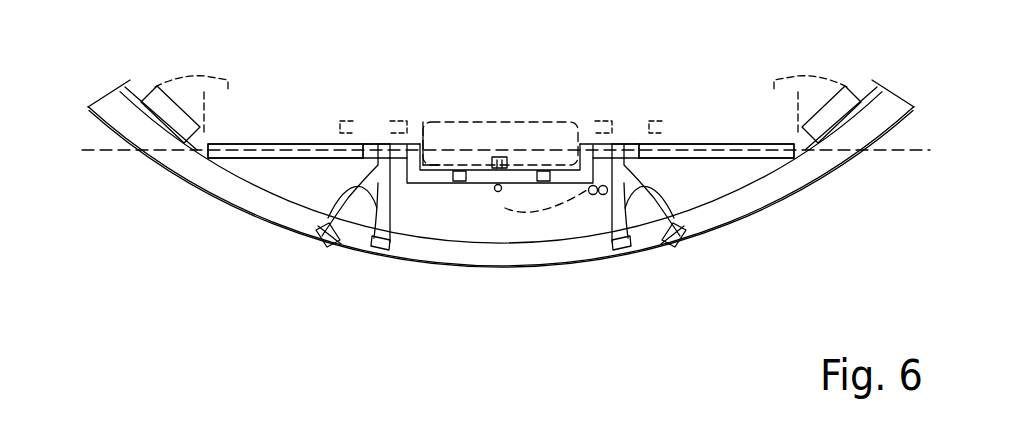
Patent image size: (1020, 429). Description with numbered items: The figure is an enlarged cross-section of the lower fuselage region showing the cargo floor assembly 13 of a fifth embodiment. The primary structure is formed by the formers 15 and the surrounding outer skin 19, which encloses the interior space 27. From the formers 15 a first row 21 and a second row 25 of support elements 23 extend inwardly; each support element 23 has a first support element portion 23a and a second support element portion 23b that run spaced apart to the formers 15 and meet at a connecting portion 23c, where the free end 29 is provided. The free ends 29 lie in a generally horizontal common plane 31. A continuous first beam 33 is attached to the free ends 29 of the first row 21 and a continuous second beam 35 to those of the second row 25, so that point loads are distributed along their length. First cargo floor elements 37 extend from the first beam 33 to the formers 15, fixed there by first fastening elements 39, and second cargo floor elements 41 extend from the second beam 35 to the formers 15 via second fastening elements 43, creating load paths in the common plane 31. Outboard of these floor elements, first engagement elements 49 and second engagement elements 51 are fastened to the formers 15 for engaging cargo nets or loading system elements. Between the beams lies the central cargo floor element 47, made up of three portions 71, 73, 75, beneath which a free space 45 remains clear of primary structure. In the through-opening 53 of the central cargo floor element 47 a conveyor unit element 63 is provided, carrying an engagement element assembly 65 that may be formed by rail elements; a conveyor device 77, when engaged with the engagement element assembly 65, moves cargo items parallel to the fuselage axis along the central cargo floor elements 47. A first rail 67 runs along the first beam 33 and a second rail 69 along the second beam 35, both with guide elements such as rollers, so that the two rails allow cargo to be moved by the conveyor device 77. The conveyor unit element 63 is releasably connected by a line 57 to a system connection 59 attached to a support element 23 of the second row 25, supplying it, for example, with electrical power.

The cargo floor assembly 13 is at (722, 128).
The former 15 is at (783, 183).
The outer skin 19 is at (757, 222).
The first row 21 is at (364, 220).
The support element 23 is at (340, 197).
The first support element portion 23a is at (327, 228).
The second support element portion 23b is at (383, 222).
The connecting portion 23c is at (405, 135).
The second row 25 is at (637, 220).
The interior space 27 is at (498, 61).
The free end 29 is at (378, 170).
The common plane 31 is at (82, 150).
The first beam 33 is at (378, 142).
The second beam 35 is at (625, 157).
The first cargo floor element 37 is at (255, 152).
The first fastening element 39 is at (207, 162).
The second cargo floor element 41 is at (745, 150).
The second fastening element 43 is at (790, 168).
The free space 45 is at (470, 280).
The central cargo floor element 47 is at (445, 140).
The first engagement element 49 is at (172, 110).
The second engagement element 51 is at (823, 110).
The through-opening 53 is at (457, 190).
The line 57 is at (547, 212).
The system connection 59 is at (597, 196).
The conveyor unit element 63 is at (470, 282).
The engagement element assembly 65 is at (500, 160).
The first rail 67 is at (363, 143).
The second rail 69 is at (615, 150).
The portion 71 is at (390, 150).
The portion 73 is at (428, 185).
The portion 75 is at (586, 158).
The conveyor device 77 is at (523, 147).